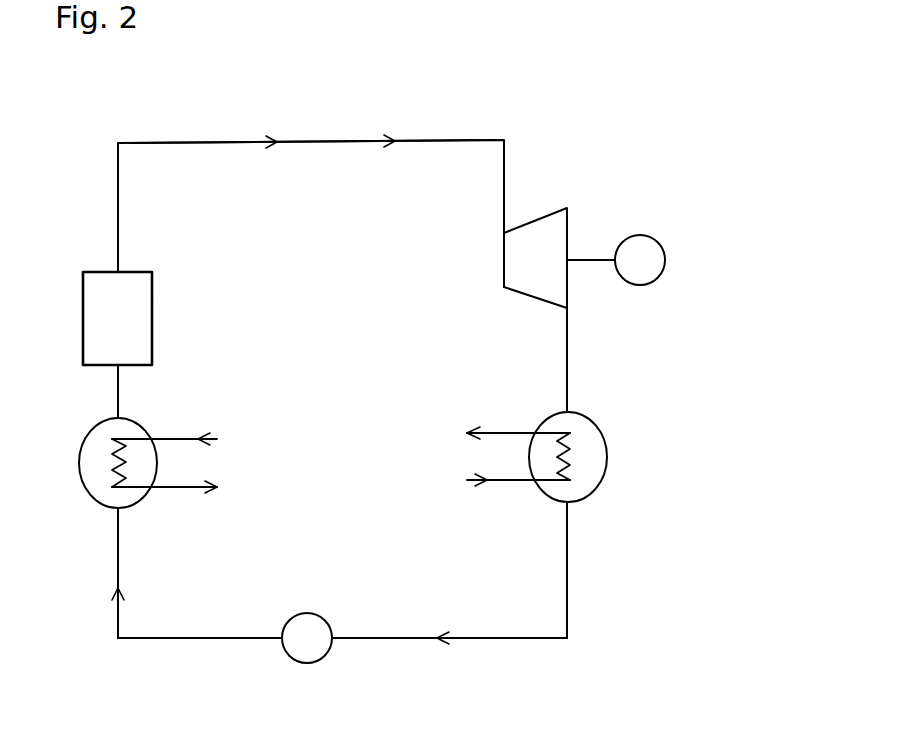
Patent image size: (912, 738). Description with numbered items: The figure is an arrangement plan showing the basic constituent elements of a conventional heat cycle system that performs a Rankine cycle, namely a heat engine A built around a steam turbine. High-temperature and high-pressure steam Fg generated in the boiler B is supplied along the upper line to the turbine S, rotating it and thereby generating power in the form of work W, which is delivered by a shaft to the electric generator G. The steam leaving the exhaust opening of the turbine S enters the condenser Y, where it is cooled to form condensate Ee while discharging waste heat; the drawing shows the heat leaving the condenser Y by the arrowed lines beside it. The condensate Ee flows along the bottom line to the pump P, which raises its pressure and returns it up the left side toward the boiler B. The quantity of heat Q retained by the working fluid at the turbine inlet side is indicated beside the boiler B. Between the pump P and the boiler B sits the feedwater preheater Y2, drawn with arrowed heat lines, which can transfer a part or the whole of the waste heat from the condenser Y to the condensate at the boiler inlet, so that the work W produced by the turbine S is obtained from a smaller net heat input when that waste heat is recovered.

The heat engine A is at (372, 117).
The steam Fg is at (312, 130).
The turbine S is at (535, 310).
The work W is at (591, 246).
The electric generator G is at (640, 260).
The boiler B is at (117, 318).
The quantity of heat retained by working fluid at turbine inlet side Q is at (165, 309).
The feedwater preheater Y2 is at (90, 432).
The condenser Y is at (596, 422).
The pump P is at (307, 638).
The condensate Ee is at (342, 627).